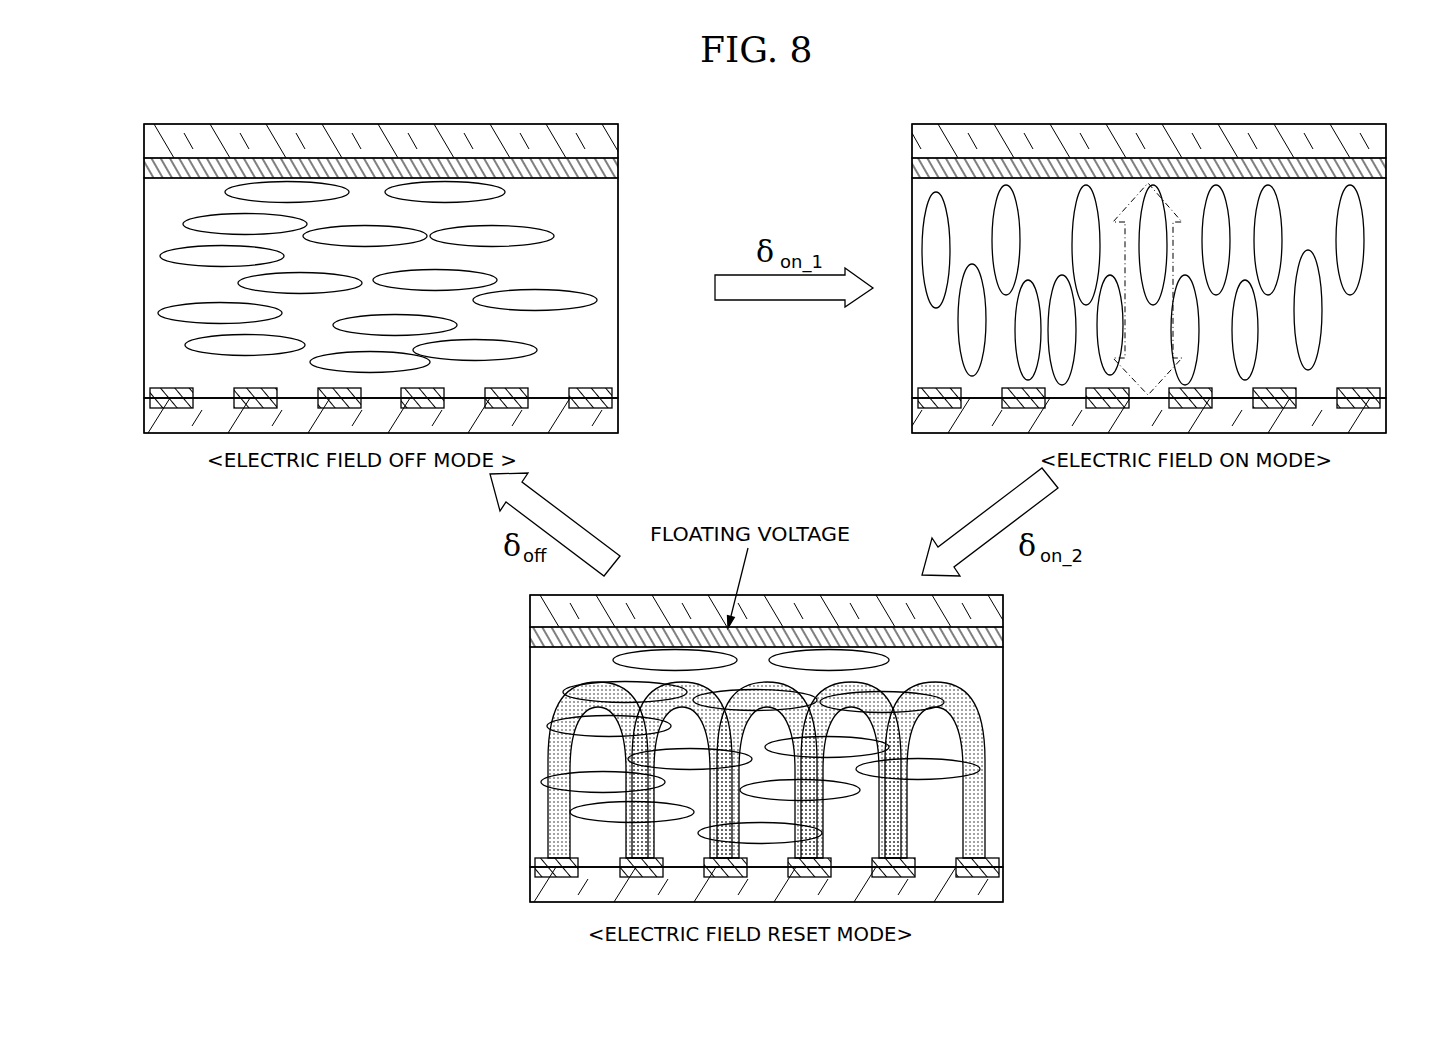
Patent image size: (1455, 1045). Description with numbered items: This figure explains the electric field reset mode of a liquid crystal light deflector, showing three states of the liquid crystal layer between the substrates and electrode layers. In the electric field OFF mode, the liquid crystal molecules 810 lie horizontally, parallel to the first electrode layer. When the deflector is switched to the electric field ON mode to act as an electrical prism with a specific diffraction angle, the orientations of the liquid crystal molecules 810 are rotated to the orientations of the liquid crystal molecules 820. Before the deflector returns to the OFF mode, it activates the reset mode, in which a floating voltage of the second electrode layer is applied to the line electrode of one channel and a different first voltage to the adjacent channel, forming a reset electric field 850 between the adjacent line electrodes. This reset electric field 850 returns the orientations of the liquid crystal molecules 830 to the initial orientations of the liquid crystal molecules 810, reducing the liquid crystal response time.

The liquid crystal molecules 810 is at (575, 302).
The liquid crystal molecules 820 is at (1307, 327).
The liquid crystal molecules 830 is at (900, 688).
The reset electric field 850 is at (562, 755).